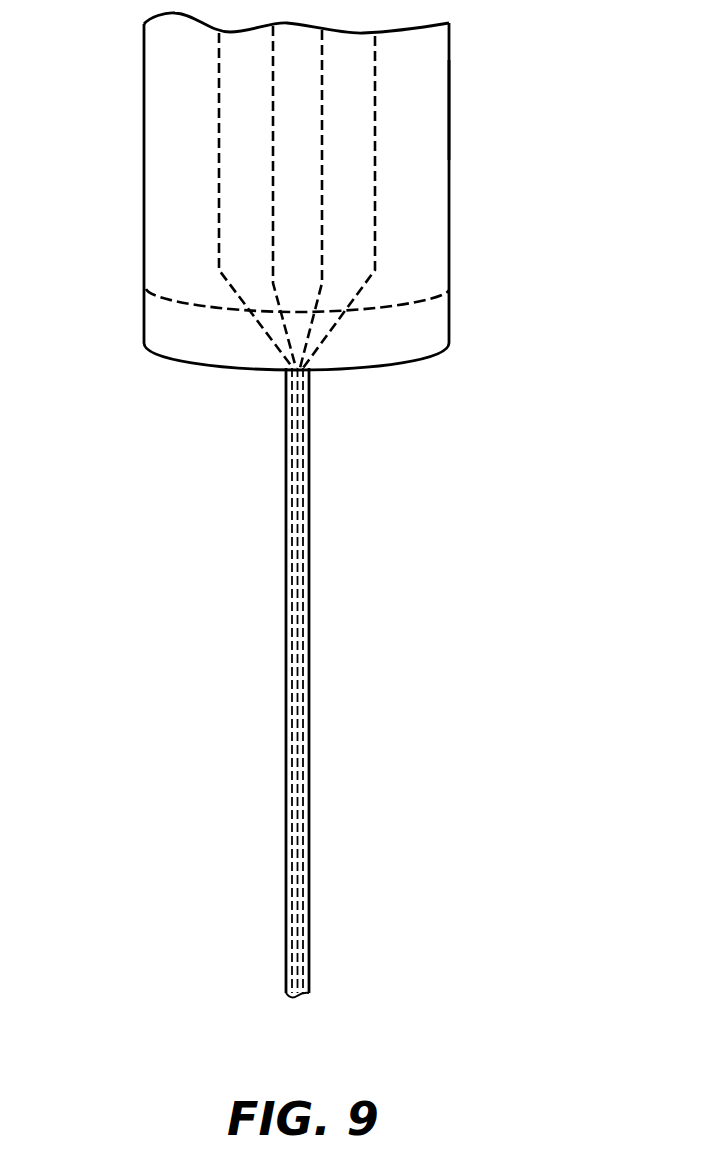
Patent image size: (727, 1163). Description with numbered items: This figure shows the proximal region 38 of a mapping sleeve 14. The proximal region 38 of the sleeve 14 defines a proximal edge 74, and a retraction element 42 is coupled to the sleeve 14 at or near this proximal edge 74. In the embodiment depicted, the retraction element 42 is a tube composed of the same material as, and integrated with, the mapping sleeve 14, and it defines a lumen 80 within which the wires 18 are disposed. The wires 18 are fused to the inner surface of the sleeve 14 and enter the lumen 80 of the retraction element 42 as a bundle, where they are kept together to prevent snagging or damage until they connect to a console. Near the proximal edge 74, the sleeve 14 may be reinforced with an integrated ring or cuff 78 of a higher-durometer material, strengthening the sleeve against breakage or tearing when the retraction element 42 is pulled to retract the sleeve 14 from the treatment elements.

The mapping sleeve 14 is at (422, 55).
The proximal region 38 is at (450, 112).
The wires 18 is at (272, 203).
The ring or cuff 78 is at (428, 327).
The proximal edge 74 is at (210, 365).
The retraction element 42 is at (309, 562).
The lumen 80 is at (309, 670).